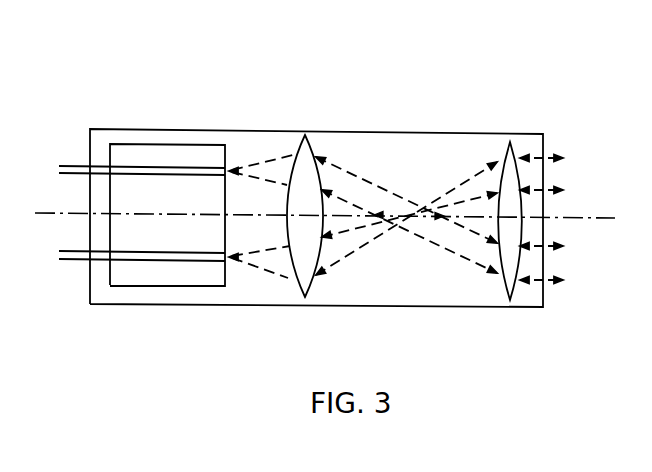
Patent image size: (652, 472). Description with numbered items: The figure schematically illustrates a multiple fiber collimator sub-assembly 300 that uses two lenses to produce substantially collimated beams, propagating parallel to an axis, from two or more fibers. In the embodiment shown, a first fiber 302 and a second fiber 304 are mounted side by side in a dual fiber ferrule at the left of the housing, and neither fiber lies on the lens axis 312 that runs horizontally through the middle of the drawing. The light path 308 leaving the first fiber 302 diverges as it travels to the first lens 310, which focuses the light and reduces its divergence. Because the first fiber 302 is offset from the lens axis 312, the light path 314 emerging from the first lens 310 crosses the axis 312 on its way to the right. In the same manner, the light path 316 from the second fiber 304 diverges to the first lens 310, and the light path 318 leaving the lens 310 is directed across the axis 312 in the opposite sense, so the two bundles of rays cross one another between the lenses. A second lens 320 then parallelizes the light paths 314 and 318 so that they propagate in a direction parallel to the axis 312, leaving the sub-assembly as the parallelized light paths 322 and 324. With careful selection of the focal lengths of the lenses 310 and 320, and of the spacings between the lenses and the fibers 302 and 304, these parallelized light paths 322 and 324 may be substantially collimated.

The collimator sub-assembly 300 is at (175, 128).
The first fiber 302 is at (77, 165).
The second fiber 304 is at (77, 263).
The light path from the first fiber 308 is at (260, 162).
The first lens 310 is at (306, 137).
The lens axis 312 is at (572, 222).
The light path emerging from the first lens 314 is at (353, 175).
The light path from the second fiber 316 is at (250, 290).
The light path from the lens 318 is at (462, 178).
The second lens 320 is at (511, 143).
The parallelized light path 322 is at (553, 283).
The parallelized light path 324 is at (552, 153).